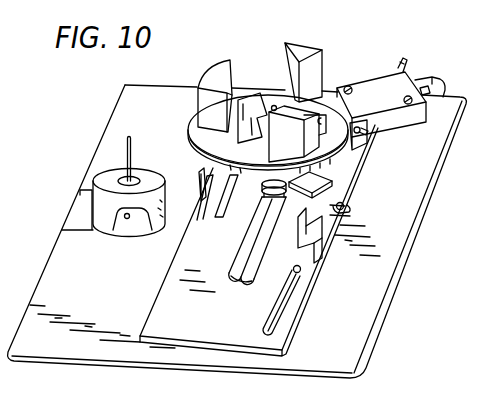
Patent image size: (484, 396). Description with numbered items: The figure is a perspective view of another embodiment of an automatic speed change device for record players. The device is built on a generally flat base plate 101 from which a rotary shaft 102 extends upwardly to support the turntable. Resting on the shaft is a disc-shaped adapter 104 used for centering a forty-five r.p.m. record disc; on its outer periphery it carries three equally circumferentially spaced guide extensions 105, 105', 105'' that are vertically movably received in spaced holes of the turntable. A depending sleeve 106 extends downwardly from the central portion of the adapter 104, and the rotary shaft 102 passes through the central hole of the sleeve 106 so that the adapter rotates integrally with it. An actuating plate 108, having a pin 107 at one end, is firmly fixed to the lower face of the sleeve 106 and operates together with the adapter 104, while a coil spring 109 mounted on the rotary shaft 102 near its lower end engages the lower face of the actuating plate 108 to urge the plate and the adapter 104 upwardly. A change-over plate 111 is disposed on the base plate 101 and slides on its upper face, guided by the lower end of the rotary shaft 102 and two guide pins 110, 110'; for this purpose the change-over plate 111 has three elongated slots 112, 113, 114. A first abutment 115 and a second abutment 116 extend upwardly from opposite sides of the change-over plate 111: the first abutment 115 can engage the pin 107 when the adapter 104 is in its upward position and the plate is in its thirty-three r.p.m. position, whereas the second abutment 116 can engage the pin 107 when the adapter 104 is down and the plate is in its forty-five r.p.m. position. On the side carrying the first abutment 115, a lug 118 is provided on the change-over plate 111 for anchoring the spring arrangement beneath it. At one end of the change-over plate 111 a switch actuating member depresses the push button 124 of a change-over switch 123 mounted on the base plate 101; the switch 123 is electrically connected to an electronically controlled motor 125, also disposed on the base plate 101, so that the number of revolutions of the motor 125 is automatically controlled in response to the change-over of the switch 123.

The base plate 101 is at (115, 133).
The rotary shaft 102 is at (236, 263).
The adapter 104 is at (258, 90).
The guide extension 105 is at (205, 84).
The guide extension 105' is at (239, 127).
The guide extension 105'' is at (322, 56).
The depending sleeve 106 is at (313, 171).
The pin 107 is at (303, 183).
The actuating plate 108 is at (213, 157).
The coil spring 109 is at (279, 203).
The guide pin 110 is at (217, 210).
The guide pin 110' is at (322, 289).
The change-over plate 111 is at (163, 306).
The elongated slot 112 is at (240, 288).
The elongated slot 113 is at (200, 220).
The elongated slot 114 is at (282, 313).
The first abutment 115 is at (312, 232).
The second abutment 116 is at (202, 181).
The lug 118 is at (343, 212).
The change-over switch 123 is at (372, 87).
The push button 124 is at (362, 131).
The electronically controlled motor 125 is at (98, 213).